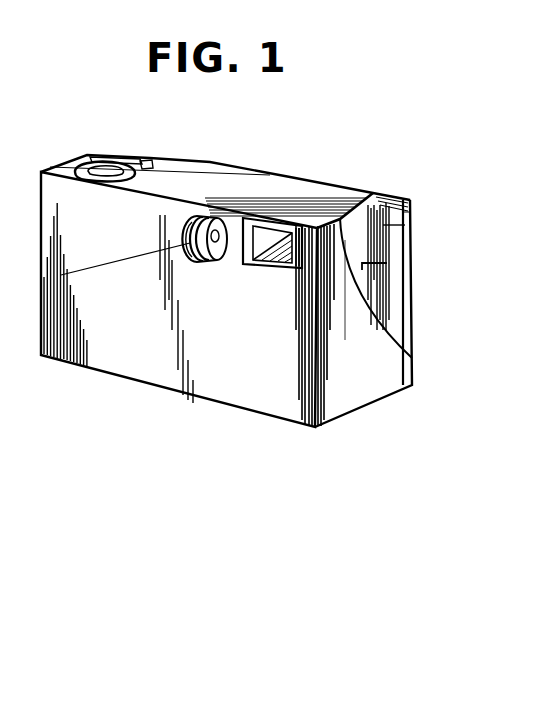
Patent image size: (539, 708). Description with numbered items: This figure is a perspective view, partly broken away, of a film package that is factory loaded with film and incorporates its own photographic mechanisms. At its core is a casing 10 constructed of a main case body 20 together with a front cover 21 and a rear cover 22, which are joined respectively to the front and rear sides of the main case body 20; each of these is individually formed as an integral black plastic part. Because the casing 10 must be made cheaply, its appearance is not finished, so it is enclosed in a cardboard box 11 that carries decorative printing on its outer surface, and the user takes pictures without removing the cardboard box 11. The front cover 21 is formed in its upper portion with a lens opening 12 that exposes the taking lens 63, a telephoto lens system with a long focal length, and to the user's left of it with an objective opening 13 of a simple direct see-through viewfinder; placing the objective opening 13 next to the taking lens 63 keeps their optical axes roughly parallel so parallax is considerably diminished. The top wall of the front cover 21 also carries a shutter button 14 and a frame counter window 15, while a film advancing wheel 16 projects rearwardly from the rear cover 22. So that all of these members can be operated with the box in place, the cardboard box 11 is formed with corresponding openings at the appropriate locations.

The casing 10 is at (480, 215).
The cardboard box 11 is at (377, 382).
The lens opening 12 is at (199, 262).
The objective opening 13 is at (262, 272).
The shutter button 14 is at (102, 179).
The frame counter window 15 is at (147, 169).
The film advancing wheel 16 is at (143, 163).
The main case body 20 is at (395, 281).
The front cover 21 is at (377, 310).
The rear cover 22 is at (413, 236).
The taking lens 63 is at (213, 224).